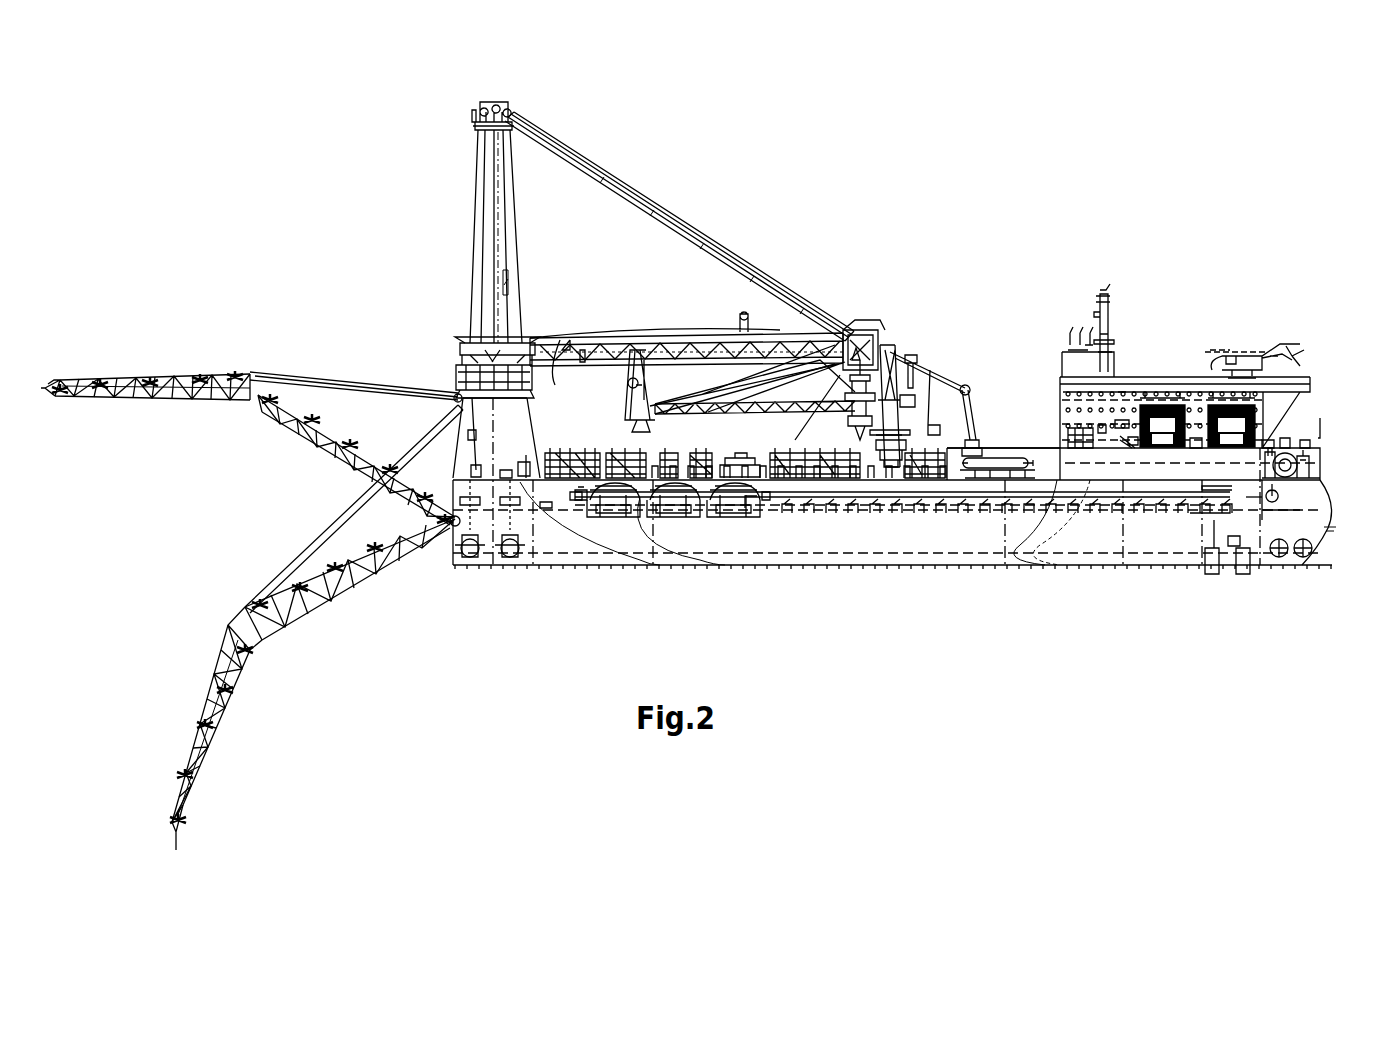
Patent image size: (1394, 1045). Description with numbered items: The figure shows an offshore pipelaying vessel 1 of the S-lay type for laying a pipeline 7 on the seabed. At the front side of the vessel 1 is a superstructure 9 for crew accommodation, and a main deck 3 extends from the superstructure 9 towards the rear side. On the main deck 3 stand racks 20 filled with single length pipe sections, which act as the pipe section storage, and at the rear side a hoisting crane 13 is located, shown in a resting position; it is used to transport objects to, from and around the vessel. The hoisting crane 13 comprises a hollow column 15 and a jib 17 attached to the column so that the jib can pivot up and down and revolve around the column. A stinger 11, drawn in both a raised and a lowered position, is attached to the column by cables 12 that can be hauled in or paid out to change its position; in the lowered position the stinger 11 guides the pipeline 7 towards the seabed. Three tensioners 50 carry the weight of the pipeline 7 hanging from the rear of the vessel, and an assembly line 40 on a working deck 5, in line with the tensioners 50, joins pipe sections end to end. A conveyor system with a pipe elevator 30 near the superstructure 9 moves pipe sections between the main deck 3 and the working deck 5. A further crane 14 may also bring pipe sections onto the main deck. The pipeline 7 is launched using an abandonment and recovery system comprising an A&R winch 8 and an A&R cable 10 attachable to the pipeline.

The offshore pipelaying vessel 1 is at (1003, 595).
The main deck 3 is at (1057, 475).
The working deck 5 is at (1292, 510).
The pipeline 7 is at (584, 498).
The A&R winch 8 is at (1298, 457).
The superstructure 9 is at (1142, 377).
The A&R cable 10 is at (1248, 498).
The stinger 11 is at (88, 400).
The cables 12 is at (357, 390).
The hoisting crane 13 is at (441, 220).
The crane 14 is at (887, 363).
The hollow column 15 is at (488, 170).
The jib 17 is at (597, 350).
The racks 20 is at (612, 438).
The pipe elevator 30 is at (1000, 449).
The assembly line 40 is at (898, 532).
The tensioners 50 is at (602, 517).